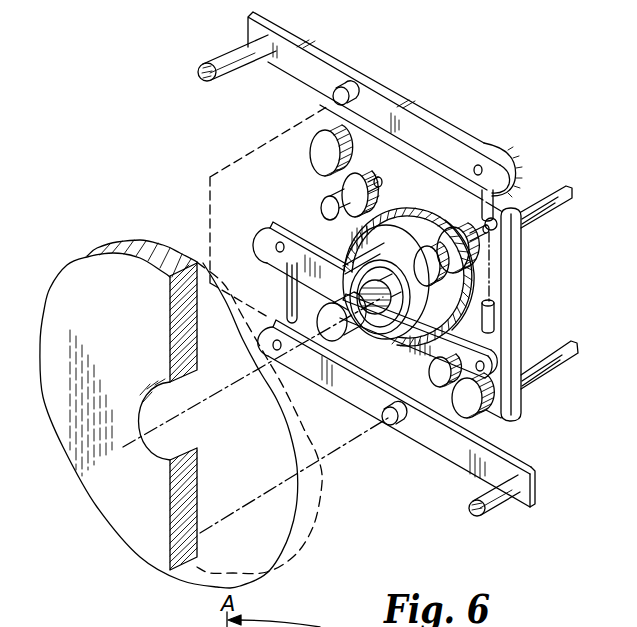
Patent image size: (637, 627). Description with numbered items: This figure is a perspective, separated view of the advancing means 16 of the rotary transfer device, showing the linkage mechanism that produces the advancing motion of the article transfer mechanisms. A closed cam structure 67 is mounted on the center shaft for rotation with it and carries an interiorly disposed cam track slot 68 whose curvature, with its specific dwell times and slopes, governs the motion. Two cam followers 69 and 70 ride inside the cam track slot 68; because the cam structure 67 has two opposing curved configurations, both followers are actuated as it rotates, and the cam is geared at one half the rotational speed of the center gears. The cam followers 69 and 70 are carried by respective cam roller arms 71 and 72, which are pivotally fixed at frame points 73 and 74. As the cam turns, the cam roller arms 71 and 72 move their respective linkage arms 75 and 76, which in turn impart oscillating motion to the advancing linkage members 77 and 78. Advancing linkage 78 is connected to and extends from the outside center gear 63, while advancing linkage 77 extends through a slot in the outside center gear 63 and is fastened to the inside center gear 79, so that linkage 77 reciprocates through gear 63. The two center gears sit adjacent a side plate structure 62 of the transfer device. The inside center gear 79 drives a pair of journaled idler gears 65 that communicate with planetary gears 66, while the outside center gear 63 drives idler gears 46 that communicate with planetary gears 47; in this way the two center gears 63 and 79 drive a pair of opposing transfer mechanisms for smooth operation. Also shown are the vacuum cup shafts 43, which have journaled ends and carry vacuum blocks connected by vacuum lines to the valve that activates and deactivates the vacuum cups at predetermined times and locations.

The advancing means 16 is at (214, 147).
The vacuum cup shafts 43 is at (562, 202).
The idler gears 46 is at (430, 258).
The planetary gears 47 is at (483, 222).
The side plate structure 62 is at (504, 284).
The outside center gear 63 is at (412, 361).
The journaled idler gears 65 is at (320, 180).
The planetary gears 66 is at (316, 147).
The closed cam structure 67 is at (122, 314).
The cam track slot 68 is at (195, 538).
The cam follower 69 is at (389, 426).
The cam follower 70 is at (343, 94).
The cam roller arm 71 is at (440, 447).
The cam roller arm 72 is at (423, 128).
The frame point 73 is at (489, 504).
The frame point 74 is at (214, 57).
The linkage arm 75 is at (287, 290).
The linkage arm 76 is at (497, 204).
The advancing linkage 77 is at (300, 250).
The advancing linkage 78 is at (408, 348).
The inside center gear 79 is at (405, 232).